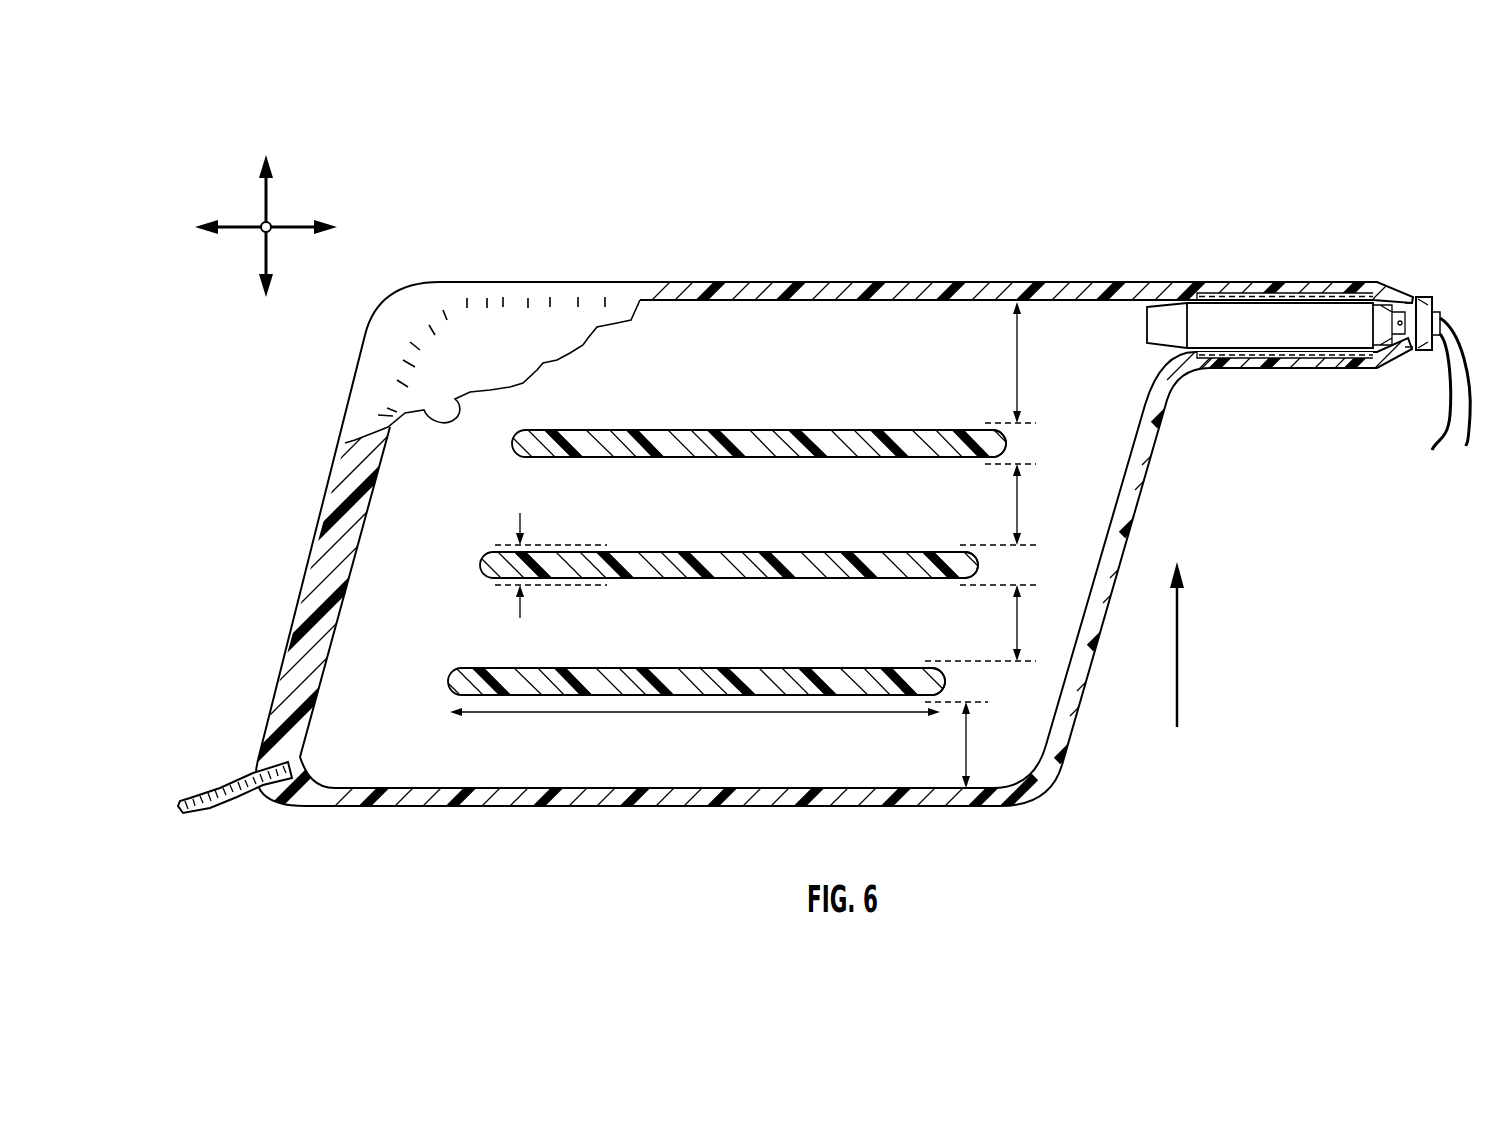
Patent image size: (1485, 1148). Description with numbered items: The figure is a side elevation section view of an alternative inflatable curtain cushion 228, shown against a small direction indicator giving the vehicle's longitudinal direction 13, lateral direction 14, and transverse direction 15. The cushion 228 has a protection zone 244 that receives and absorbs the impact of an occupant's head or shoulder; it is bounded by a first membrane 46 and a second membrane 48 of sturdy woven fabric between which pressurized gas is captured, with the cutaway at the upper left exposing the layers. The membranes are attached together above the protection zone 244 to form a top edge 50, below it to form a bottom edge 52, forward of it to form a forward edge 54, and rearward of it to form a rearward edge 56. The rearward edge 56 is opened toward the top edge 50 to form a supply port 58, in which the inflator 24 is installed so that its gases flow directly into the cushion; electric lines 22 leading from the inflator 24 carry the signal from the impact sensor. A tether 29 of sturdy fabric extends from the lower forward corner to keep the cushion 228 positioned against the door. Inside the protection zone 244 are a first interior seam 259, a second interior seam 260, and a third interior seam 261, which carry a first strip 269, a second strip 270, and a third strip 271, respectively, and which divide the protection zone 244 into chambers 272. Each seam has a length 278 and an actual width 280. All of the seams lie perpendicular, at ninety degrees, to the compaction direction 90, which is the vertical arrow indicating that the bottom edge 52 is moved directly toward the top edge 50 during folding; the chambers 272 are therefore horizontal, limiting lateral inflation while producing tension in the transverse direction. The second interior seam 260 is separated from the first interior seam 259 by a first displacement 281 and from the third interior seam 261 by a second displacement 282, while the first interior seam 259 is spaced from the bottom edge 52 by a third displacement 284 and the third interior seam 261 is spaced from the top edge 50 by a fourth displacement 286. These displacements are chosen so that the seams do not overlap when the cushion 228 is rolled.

The longitudinal direction 13 is at (292, 230).
The lateral direction 14 is at (262, 223).
The transverse direction 15 is at (267, 188).
The electric lines 22 is at (1466, 335).
The inflator 24 is at (1330, 315).
The tether 29 is at (212, 790).
The first membrane 46 is at (632, 327).
The second membrane 48 is at (413, 422).
The top edge 50 is at (705, 288).
The bottom edge 52 is at (572, 808).
The forward edge 54 is at (316, 531).
The rearward edge 56 is at (1138, 493).
The supply port 58 is at (1322, 370).
The compaction direction 90 is at (1178, 657).
The cushion 228 is at (1074, 234).
The protection zone 244 is at (812, 334).
The first interior seam 259 is at (632, 663).
The second interior seam 260 is at (677, 546).
The third interior seam 261 is at (685, 418).
The first strip 269 is at (858, 668).
The second strip 270 is at (895, 551).
The third strip 271 is at (933, 427).
The chambers 272 is at (799, 380).
The length 278 is at (496, 714).
The actual width 280 is at (551, 553).
The first displacement 281 is at (1017, 627).
The second displacement 282 is at (1017, 502).
The third displacement 284 is at (966, 748).
The fourth displacement 286 is at (1017, 350).